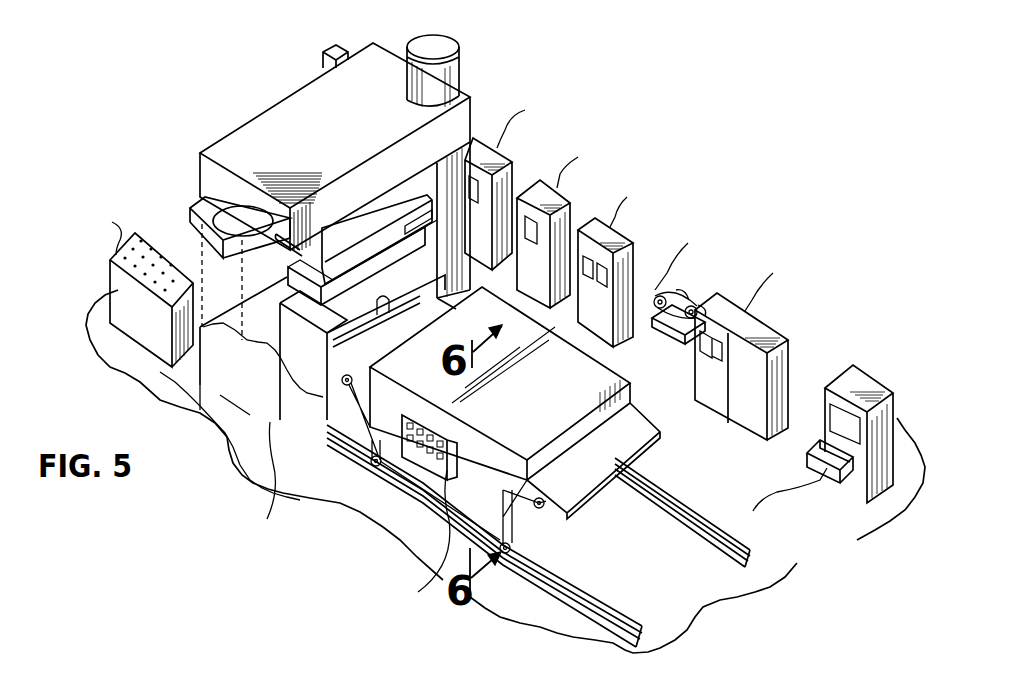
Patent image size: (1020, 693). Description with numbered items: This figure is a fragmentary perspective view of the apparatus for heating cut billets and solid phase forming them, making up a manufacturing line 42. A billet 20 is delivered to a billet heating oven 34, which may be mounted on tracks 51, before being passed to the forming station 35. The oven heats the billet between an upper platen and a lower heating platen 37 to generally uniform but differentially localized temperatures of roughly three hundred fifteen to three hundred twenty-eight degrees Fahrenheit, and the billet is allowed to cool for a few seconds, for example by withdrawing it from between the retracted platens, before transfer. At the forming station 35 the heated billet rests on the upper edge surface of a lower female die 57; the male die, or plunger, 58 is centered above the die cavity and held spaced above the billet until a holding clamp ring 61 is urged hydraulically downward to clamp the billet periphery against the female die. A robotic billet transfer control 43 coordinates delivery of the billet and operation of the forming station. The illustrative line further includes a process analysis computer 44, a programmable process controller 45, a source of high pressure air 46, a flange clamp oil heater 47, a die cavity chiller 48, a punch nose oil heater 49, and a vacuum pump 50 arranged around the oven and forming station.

The billet 20 is at (593, 477).
The billet heating oven 34 is at (502, 490).
The forming station 35 is at (468, 93).
The lower heating platen 37 is at (503, 490).
The manufacturing line 42 is at (583, 88).
The robotic billet transfer control 43 is at (118, 288).
The process analysis computer 44 is at (865, 377).
The programmable process controller 45 is at (742, 412).
The source of high pressure air 46 is at (687, 290).
The flange clamp oil heater 47 is at (632, 238).
The die cavity chiller 48 is at (575, 208).
The punch nose oil heater 49 is at (517, 170).
The vacuum pump 50 is at (323, 53).
The tracks 51 is at (610, 606).
The lower female die 57 is at (235, 438).
The male die 58 is at (382, 228).
The holding clamp ring 61 is at (410, 224).